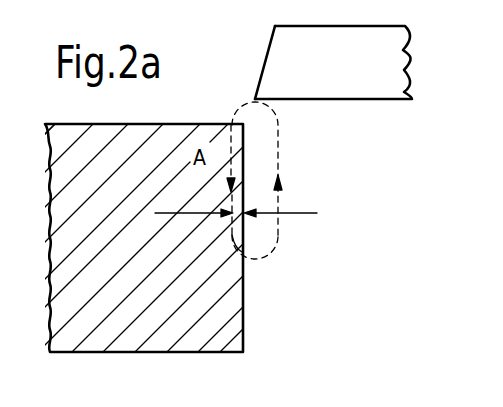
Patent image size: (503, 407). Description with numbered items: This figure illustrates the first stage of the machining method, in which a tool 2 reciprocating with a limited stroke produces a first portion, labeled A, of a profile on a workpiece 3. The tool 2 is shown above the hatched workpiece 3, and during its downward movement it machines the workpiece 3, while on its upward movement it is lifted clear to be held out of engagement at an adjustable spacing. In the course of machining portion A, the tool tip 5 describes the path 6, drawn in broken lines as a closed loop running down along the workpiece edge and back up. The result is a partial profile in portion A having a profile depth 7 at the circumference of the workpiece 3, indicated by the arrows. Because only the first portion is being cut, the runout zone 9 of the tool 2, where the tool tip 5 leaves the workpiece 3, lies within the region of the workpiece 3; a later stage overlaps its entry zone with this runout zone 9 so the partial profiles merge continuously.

The tool 2 is at (382, 63).
The workpiece 3 is at (205, 335).
The tool tip 5 is at (255, 99).
The path 6 is at (280, 152).
The profile depth 7 is at (247, 200).
The runout zone 9 is at (262, 258).